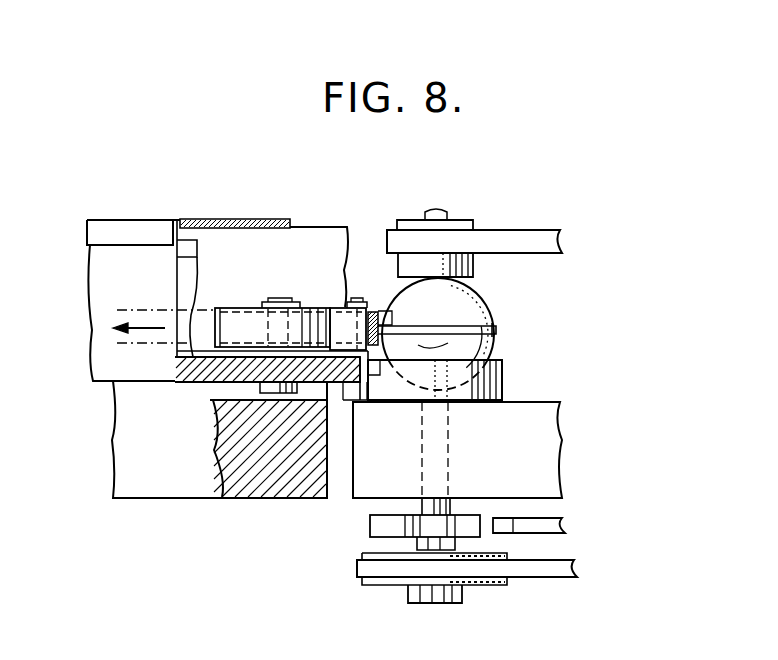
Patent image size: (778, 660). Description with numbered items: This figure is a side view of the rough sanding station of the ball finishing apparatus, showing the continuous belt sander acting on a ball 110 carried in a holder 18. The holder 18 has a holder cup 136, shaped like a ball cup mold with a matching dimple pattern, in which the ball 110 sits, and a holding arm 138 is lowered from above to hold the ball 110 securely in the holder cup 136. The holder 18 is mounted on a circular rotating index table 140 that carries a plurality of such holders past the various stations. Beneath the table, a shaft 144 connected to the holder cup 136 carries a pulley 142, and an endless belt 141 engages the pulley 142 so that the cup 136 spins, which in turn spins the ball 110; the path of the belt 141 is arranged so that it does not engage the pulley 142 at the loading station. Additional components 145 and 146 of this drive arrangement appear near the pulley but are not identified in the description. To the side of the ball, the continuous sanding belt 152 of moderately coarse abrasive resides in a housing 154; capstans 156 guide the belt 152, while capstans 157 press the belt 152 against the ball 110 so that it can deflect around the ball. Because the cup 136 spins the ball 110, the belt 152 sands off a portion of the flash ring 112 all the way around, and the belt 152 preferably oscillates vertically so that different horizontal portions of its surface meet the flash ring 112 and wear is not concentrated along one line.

The housing 154 is at (277, 219).
The continuous sanding belt 152 is at (204, 310).
The capstans 156 is at (250, 305).
The capstans 157 is at (335, 306).
The holder 18 is at (500, 197).
The holding arm 138 is at (549, 230).
The ball 110 is at (476, 293).
The flash ring 112 is at (497, 331).
The holder cup 136 is at (505, 370).
The rotating index table 140 is at (538, 410).
The shaft 144 is at (455, 510).
The gear 145 is at (368, 527).
The bracket 146 is at (566, 528).
The endless belt 141 is at (553, 568).
The pulley 142 is at (485, 585).